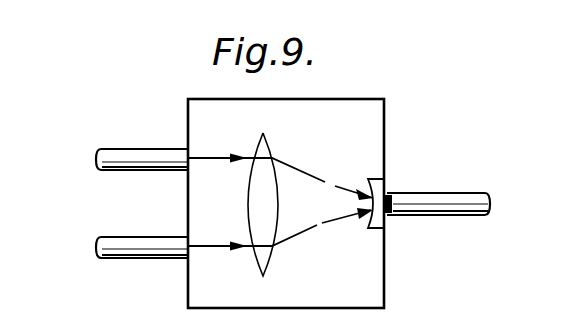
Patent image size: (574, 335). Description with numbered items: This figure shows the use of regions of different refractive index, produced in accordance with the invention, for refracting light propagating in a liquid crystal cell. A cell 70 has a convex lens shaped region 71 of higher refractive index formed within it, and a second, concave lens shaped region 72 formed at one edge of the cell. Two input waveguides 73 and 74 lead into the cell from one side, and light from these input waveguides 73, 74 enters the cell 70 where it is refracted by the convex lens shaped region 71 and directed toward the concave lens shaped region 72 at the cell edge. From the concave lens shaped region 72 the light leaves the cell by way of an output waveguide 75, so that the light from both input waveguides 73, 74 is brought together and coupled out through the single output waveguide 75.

The cell 70 is at (382, 95).
The convex lens shaped region 71 is at (267, 143).
The concave lens shaped region 72 is at (387, 182).
The input waveguide 73 is at (113, 152).
The input waveguide 74 is at (97, 245).
The output waveguide 75 is at (462, 193).